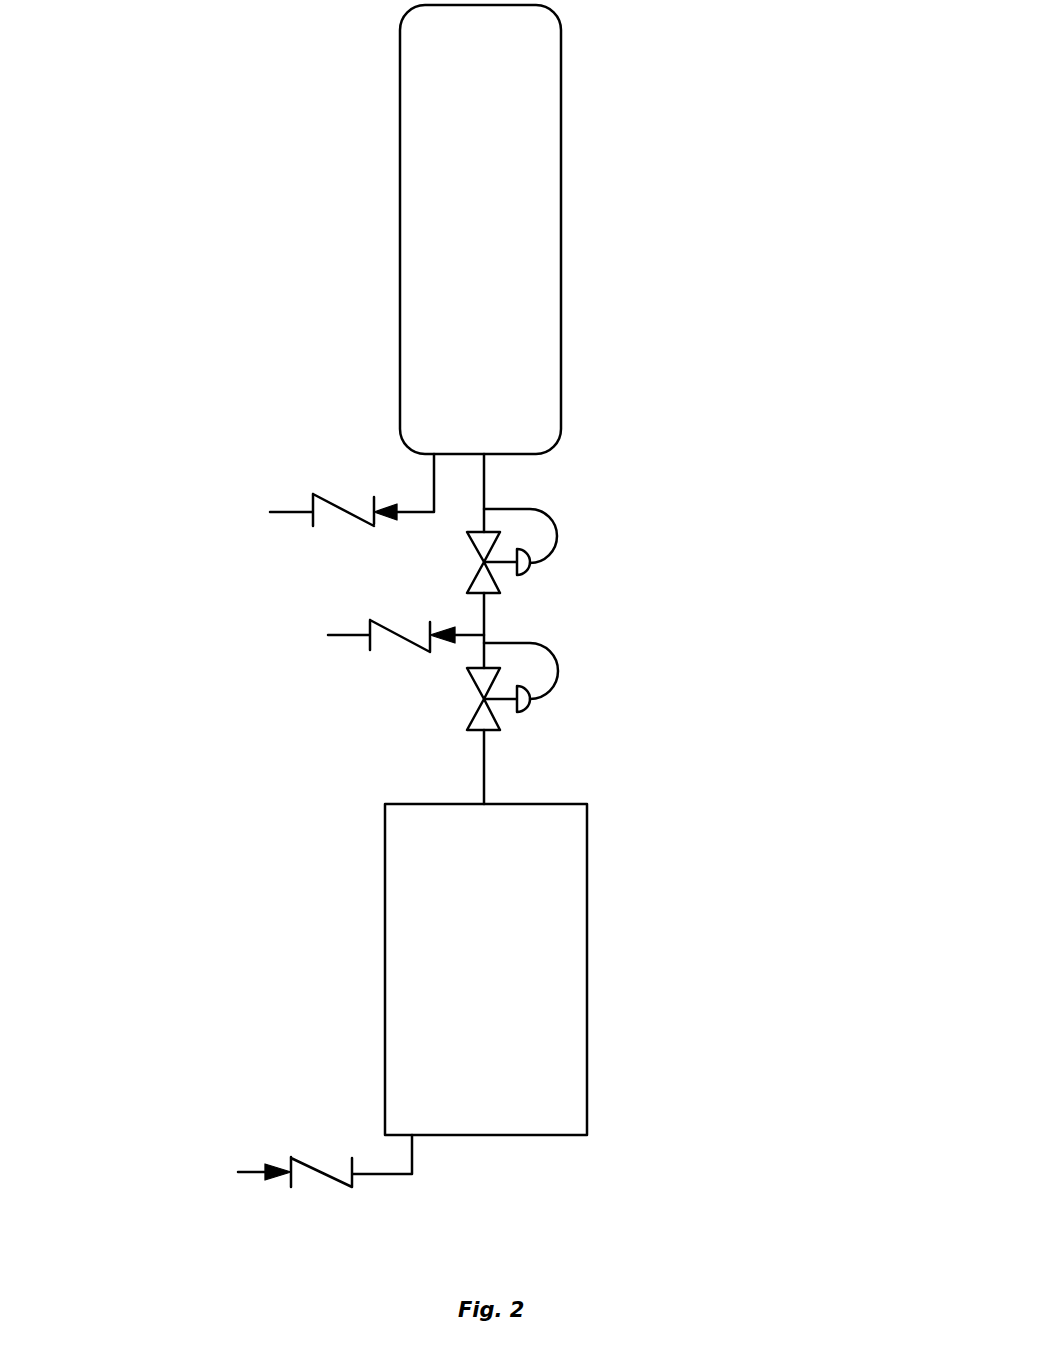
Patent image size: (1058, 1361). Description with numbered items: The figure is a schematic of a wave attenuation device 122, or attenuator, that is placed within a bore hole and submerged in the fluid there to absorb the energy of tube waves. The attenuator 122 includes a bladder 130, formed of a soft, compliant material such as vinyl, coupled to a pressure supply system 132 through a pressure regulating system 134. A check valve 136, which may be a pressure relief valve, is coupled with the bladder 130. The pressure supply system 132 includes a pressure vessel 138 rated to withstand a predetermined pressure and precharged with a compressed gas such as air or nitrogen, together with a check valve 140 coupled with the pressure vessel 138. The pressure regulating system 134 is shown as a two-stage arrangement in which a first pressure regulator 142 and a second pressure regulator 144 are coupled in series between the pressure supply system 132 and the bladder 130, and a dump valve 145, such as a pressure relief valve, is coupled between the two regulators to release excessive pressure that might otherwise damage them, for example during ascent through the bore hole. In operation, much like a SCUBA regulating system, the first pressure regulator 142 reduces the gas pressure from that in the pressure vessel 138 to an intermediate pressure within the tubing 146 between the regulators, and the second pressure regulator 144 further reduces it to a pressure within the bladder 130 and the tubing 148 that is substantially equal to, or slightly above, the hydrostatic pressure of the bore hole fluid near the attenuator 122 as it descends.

The wave attenuation device 122 is at (638, 360).
The bladder 130 is at (562, 260).
The pressure supply system 132 is at (628, 972).
The pressure regulating system 134 is at (598, 573).
The check valve 136 is at (354, 516).
The pressure vessel 138 is at (587, 1016).
The check valve 140 is at (330, 1178).
The first pressure regulator 142 is at (476, 712).
The second pressure regulator 144 is at (476, 564).
The dump valve 145 is at (395, 640).
The tubing 146 is at (484, 614).
The tubing 148 is at (484, 478).